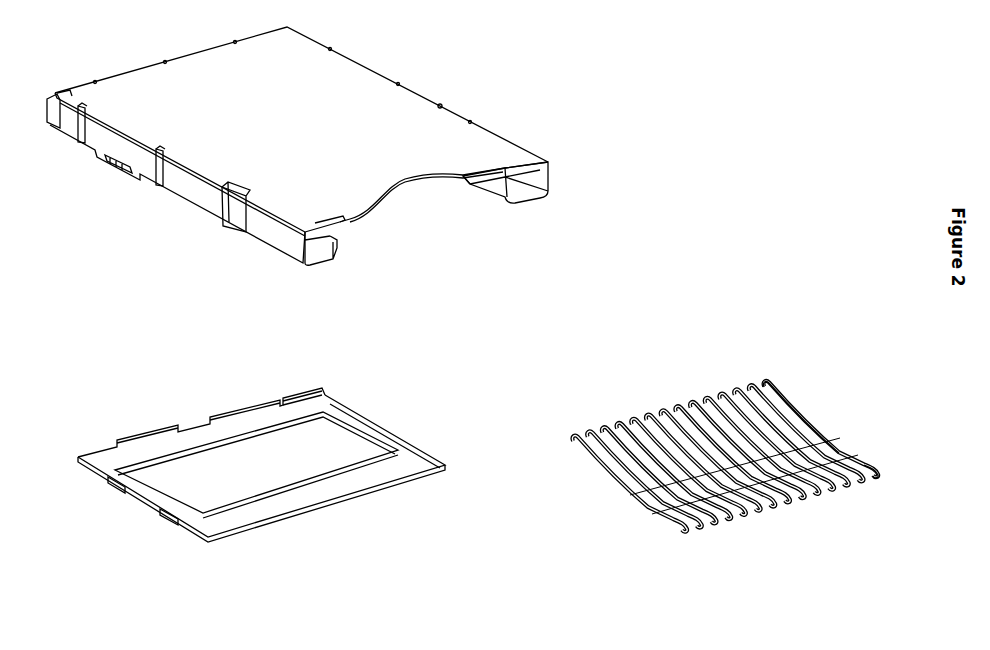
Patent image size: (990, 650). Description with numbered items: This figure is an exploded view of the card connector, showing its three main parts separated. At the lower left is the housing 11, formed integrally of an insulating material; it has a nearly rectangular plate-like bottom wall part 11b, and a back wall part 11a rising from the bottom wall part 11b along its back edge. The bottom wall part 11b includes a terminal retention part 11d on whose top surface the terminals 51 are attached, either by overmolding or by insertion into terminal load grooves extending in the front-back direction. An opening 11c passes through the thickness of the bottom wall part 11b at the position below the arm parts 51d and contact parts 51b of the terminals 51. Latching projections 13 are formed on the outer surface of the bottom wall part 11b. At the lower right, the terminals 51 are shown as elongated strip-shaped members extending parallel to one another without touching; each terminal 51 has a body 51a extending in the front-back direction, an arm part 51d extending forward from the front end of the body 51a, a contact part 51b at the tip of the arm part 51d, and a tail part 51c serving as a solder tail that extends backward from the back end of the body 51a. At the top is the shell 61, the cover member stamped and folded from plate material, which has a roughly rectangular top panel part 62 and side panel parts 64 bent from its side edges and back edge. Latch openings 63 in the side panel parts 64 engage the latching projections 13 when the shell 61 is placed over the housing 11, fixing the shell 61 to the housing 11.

The housing 11 is at (442, 460).
The back wall part 11a is at (305, 398).
The bottom wall part 11b is at (392, 433).
The opening 11c is at (348, 438).
The terminal retention part 11d is at (402, 472).
The latching projection 13 is at (138, 506).
The terminal 51 is at (823, 428).
The body 51a is at (850, 443).
The contact part 51b is at (765, 382).
The tail part 51c is at (882, 458).
The arm part 51d is at (797, 412).
The shell 61 is at (368, 64).
The top panel part 62 is at (243, 55).
The latch opening 63 is at (118, 173).
The side panel part 64 is at (203, 200).